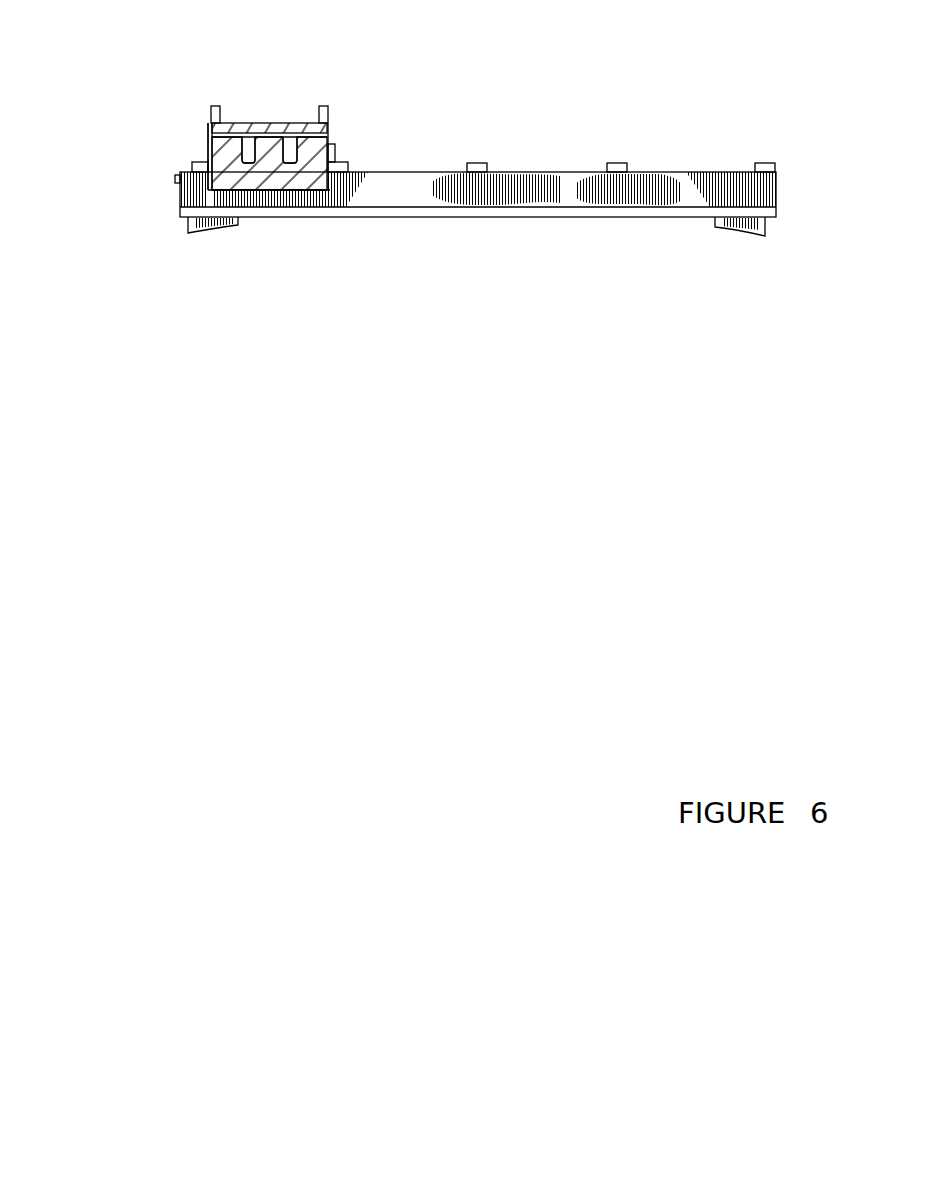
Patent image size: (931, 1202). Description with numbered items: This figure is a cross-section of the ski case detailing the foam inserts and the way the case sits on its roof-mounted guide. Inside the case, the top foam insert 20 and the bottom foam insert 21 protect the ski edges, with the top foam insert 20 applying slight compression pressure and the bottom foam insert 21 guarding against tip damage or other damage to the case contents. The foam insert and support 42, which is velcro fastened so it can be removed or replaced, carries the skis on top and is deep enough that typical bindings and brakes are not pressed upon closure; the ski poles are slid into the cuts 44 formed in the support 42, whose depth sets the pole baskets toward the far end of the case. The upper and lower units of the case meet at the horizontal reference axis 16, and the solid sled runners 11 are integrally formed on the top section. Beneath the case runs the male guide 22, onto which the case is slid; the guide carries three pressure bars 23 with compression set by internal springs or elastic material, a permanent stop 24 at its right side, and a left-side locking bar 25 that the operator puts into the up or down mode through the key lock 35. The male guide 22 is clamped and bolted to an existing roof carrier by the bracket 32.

The sled runners 11 is at (322, 106).
The horizontal reference axis 16 is at (208, 160).
The top foam insert 20 is at (265, 125).
The bottom foam insert 21 is at (262, 186).
The male guide 22 is at (473, 217).
The pressure bars 23 is at (338, 162).
The permanent stop 24 is at (765, 162).
The locking bar 25 is at (197, 162).
The bracket 32 is at (213, 230).
The key lock 35 is at (175, 179).
The foam insert and support 42 is at (295, 185).
The cuts 44 is at (288, 147).